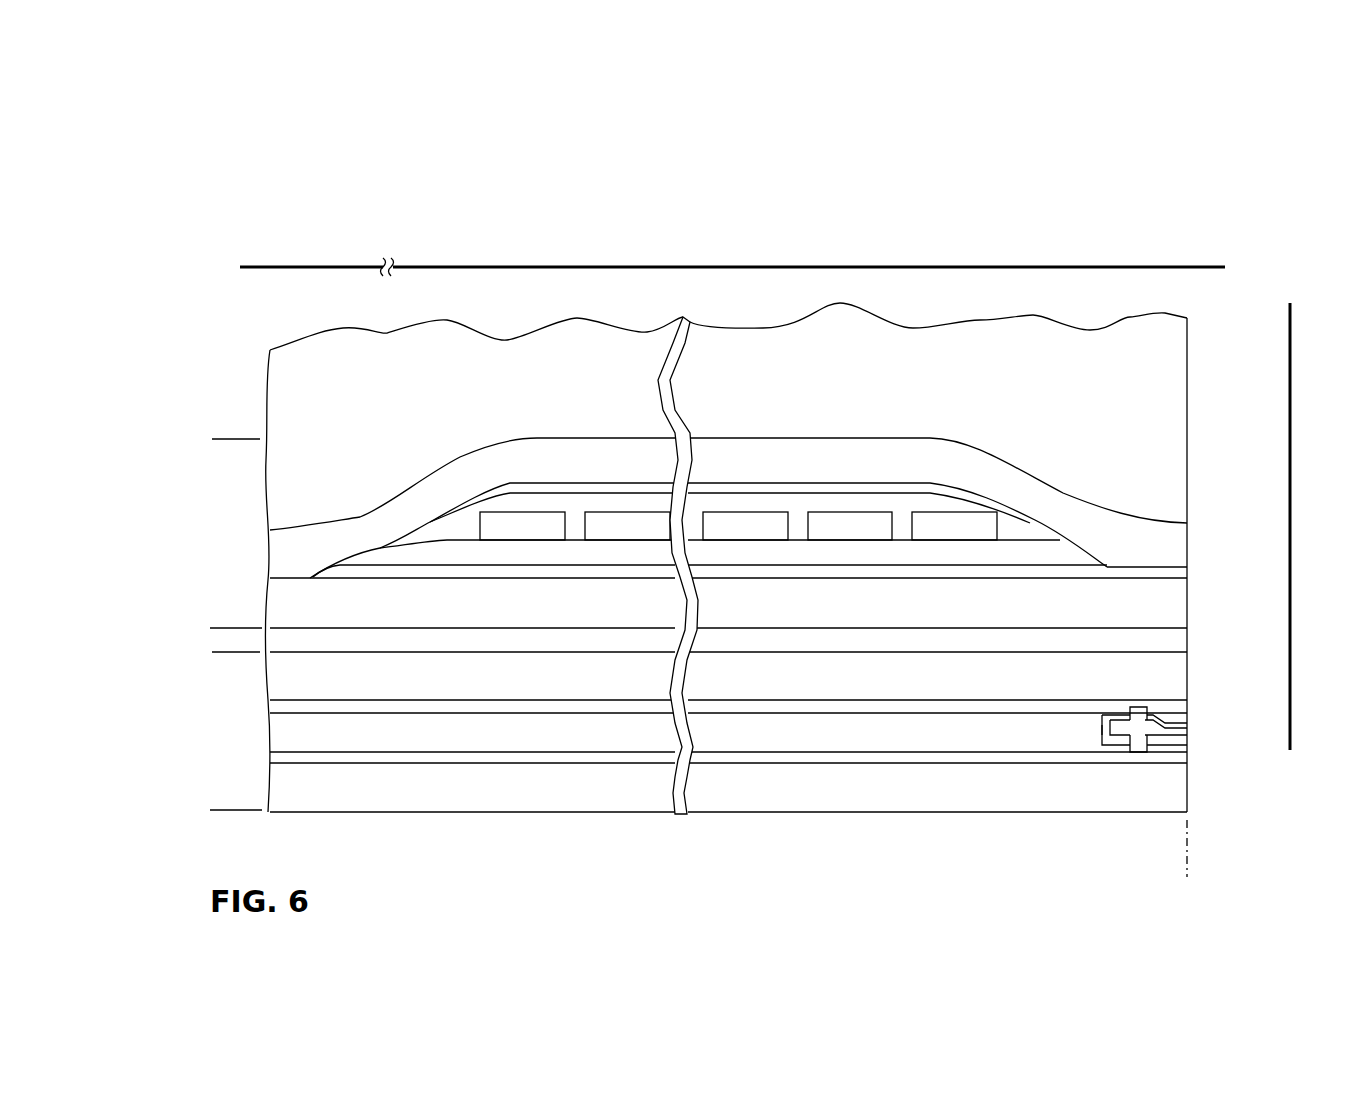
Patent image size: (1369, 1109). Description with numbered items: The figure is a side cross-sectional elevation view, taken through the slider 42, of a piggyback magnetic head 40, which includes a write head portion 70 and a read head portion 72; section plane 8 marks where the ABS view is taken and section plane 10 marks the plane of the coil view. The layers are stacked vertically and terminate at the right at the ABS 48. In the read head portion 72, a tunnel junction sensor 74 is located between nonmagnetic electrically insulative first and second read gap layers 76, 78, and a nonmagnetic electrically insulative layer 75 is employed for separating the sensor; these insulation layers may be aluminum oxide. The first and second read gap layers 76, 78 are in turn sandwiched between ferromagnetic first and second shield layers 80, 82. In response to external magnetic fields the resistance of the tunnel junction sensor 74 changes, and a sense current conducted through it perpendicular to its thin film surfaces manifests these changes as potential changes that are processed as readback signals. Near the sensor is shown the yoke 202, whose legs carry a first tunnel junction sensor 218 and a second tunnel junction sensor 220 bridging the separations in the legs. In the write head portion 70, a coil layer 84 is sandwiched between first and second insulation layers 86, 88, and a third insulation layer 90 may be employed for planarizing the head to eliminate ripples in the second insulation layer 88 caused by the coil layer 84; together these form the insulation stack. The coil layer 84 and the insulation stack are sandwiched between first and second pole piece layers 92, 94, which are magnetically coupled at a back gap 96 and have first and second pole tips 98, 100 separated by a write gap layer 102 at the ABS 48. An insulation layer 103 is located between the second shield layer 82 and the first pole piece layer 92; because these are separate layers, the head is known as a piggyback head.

The section plane 8— 8 is at (1348, 740).
The section plane 10— 10 is at (1217, 252).
The piggyback magnetic head 40 is at (226, 336).
The slider 42 is at (1180, 402).
The ABS 48 is at (1187, 864).
The write head portion 70 is at (222, 615).
The read head portion 72 is at (222, 797).
The tunnel junction sensor 74 is at (1183, 730).
The nonmagnetic electrically insulative layer 75 is at (1007, 738).
The first read gap layer 76 is at (552, 765).
The second read gap layer 78 is at (497, 698).
The first shield layer 80 is at (802, 800).
The second shield layer 82 is at (908, 688).
The coil layer 84 is at (630, 517).
The first insulation layer 86 is at (856, 550).
The second insulation layer 88 is at (1017, 522).
The third insulation layer 90 is at (540, 488).
The first pole piece layer 92 is at (952, 615).
The second pole piece layer 94 is at (793, 450).
The back gap 96 is at (296, 578).
The first pole tip 98 is at (1183, 600).
The second pole tip 100 is at (1183, 542).
The write gap layer 102 is at (1183, 572).
The insulation layer 103 is at (853, 645).
The yoke 202 is at (1094, 728).
The first tunnel junction sensor 218 is at (1140, 752).
The second tunnel junction sensor 220 is at (1138, 707).